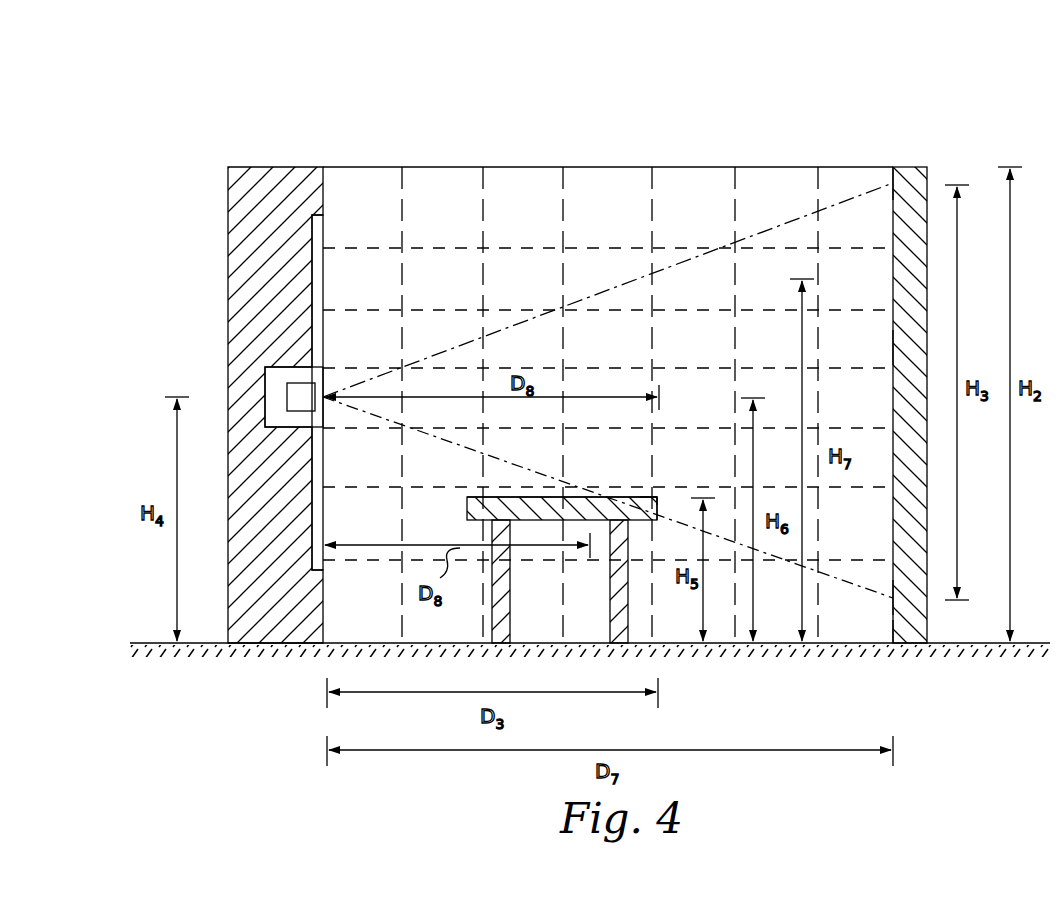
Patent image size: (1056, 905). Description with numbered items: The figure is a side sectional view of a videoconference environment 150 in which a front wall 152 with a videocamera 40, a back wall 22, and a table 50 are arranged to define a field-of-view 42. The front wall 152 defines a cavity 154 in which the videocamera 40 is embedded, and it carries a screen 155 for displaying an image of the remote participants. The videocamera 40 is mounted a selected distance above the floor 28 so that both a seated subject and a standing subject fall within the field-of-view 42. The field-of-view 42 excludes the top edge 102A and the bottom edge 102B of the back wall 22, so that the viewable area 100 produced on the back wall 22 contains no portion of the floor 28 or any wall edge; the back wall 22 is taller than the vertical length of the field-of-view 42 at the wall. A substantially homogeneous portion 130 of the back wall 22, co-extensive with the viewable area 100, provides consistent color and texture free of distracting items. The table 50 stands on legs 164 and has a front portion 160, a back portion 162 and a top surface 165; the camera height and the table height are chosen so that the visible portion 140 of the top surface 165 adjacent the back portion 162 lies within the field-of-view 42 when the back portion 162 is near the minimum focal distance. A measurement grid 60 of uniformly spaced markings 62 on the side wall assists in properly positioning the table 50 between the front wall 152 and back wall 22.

The videoconference environment 150 is at (222, 74).
The front wall 152 is at (262, 167).
The screen 155 is at (318, 285).
The cavity 154 is at (283, 367).
The videocamera 40 is at (287, 395).
The measurement grid 60 is at (402, 193).
The uniformly spaced markings 62 is at (607, 165).
The field-of-view 42 is at (605, 290).
The table 50 is at (610, 488).
The back wall 22 is at (908, 167).
The top edge 102A is at (893, 167).
The substantially homogeneous portion 130 is at (893, 347).
The viewable area 100 is at (893, 598).
The bottom edge 102B is at (893, 645).
The front portion 160 is at (566, 538).
The legs 164 is at (610, 585).
The top surface 165 is at (528, 497).
The visible portion 140 is at (640, 497).
The back portion 162 is at (658, 510).
The floor 28 is at (373, 643).